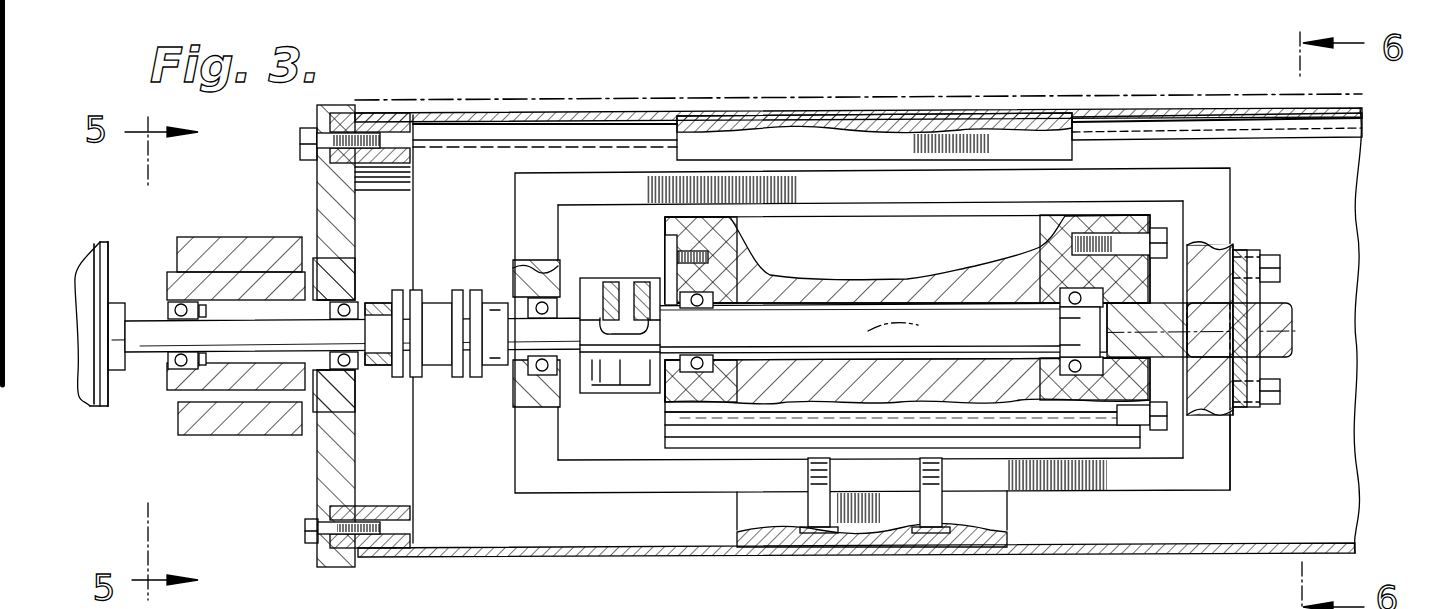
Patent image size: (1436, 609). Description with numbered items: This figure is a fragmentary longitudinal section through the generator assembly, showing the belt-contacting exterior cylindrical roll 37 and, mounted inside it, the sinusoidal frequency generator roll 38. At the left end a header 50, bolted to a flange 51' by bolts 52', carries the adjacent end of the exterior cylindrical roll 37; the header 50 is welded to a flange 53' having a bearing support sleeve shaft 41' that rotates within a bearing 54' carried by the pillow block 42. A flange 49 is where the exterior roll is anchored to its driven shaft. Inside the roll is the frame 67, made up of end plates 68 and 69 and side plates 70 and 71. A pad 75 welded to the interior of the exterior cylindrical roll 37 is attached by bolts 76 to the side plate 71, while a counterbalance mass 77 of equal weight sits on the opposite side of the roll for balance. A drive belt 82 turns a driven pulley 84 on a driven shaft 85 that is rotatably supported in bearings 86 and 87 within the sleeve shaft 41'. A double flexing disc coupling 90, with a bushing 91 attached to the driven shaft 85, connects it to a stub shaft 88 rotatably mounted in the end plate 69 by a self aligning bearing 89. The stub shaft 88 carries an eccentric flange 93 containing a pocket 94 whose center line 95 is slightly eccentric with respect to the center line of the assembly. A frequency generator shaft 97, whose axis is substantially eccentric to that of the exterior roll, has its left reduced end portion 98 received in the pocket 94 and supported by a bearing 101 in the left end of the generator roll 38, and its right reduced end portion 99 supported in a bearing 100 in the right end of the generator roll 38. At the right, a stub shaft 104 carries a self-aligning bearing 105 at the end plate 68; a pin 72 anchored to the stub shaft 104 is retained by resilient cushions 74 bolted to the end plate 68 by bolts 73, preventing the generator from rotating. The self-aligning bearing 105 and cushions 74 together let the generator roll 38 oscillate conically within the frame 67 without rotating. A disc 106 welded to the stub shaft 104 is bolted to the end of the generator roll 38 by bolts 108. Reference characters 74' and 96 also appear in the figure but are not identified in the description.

The exterior cylindrical roll 37 is at (1160, 110).
The generator roll 38 is at (912, 246).
The sleeve shaft 41' is at (236, 423).
The pillow block 42 is at (200, 246).
The flange 49 is at (1163, 597).
The header 50 is at (330, 180).
The flange 51' is at (372, 300).
The bolts 52' is at (309, 315).
The flange 53' is at (357, 317).
The bearing 54' is at (236, 246).
The frame 67 is at (1243, 190).
The end plate 68 is at (1225, 445).
The end plate 69 is at (523, 212).
The side plate 70 is at (872, 330).
The side plate 71 is at (687, 478).
The pin 72 is at (1252, 250).
The bolts 73 is at (1282, 265).
The resilient cushions 74 is at (1249, 354).
The flange face 74' is at (1323, 343).
The pad 75 is at (987, 518).
The bolts 76 is at (807, 512).
The counterbalance mass 77 is at (900, 146).
The drive belt 82 is at (88, 406).
The driven pulley 84 is at (108, 266).
The driven shaft 85 is at (143, 352).
The bearing 86 is at (183, 372).
The bearing 87 is at (347, 372).
The stub shaft 88 is at (527, 352).
The self aligning bearing 89 is at (546, 372).
The double flexing disc coupling 90 is at (437, 313).
The bushing 91 is at (378, 368).
The eccentric flange 93 is at (587, 284).
The pocket 94 is at (635, 282).
The center line 95 is at (914, 324).
The coupling hub 96 is at (440, 384).
The frequency generator shaft 97 is at (828, 323).
The left reduced end portion 98 is at (642, 378).
The right reduced end portion 99 is at (1053, 323).
The bearing 100 is at (1050, 257).
The bearing 101 is at (708, 300).
The stub shaft 104 is at (1282, 328).
The self-aligning bearing 105 is at (1210, 370).
The disc 106 is at (1128, 430).
The bolts 108 is at (1156, 230).